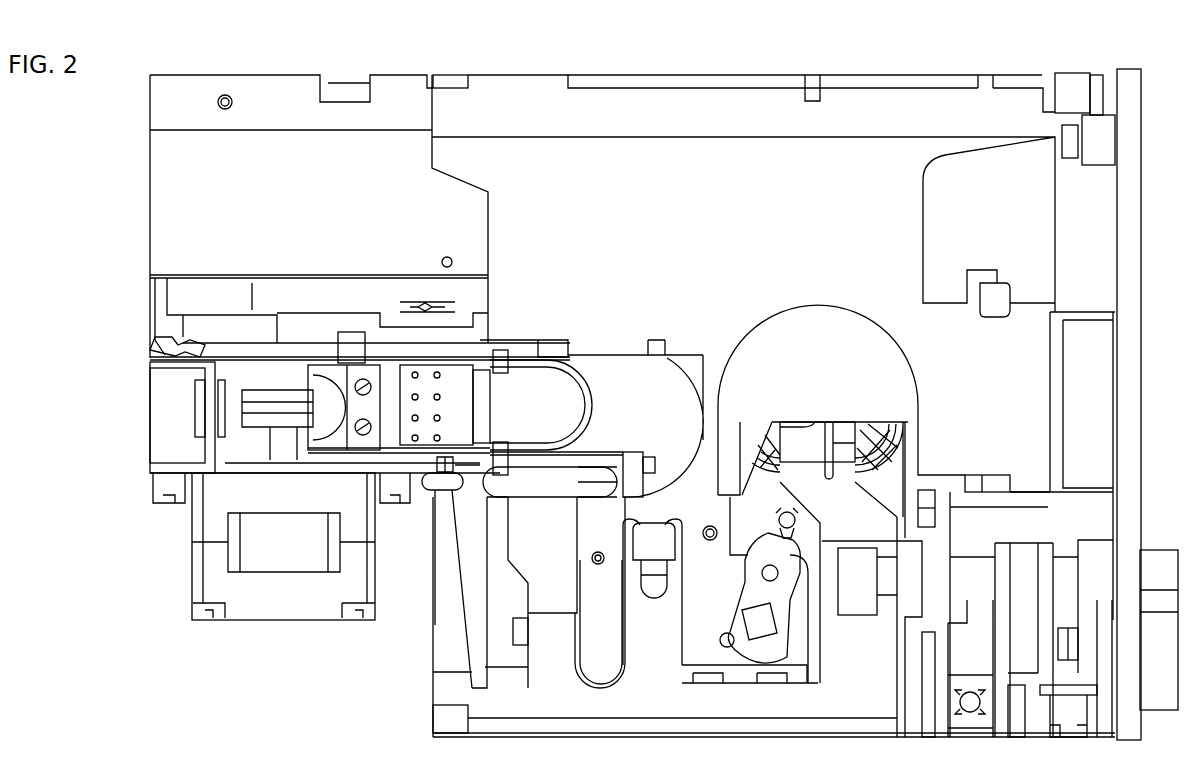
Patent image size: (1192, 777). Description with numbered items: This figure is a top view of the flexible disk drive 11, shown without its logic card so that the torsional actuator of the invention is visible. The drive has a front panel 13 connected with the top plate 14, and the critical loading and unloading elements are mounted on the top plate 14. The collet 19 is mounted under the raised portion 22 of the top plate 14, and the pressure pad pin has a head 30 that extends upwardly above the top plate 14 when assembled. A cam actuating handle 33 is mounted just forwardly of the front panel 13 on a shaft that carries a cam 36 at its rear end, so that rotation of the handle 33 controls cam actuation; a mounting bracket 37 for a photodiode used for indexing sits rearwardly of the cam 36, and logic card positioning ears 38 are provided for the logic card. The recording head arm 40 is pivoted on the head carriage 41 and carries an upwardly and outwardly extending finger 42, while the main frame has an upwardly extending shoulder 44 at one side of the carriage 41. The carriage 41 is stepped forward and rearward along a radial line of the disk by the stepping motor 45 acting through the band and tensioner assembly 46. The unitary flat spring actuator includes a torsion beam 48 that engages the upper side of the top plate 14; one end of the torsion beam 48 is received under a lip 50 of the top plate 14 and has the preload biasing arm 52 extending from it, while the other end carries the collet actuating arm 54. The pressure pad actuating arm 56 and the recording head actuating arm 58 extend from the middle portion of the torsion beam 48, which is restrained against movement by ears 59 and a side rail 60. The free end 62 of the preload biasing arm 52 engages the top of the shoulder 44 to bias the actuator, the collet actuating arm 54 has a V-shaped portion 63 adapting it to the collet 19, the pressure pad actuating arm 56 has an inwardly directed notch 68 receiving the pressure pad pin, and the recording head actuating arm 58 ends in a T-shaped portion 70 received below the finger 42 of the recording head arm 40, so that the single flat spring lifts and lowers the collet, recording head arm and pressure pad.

The flexible disk drive 11 is at (553, 66).
The front panel 13 is at (1128, 160).
The top plate 14 is at (703, 148).
The collet 19 is at (883, 435).
The raised portion 22 is at (823, 320).
The head 30 is at (650, 540).
The cam actuating handle 33 is at (1153, 695).
The cam 36 is at (858, 603).
The mounting bracket 37 is at (757, 598).
The logic card positioning ears 38 is at (448, 83).
The recording head arm 40 is at (572, 395).
The head carriage 41 is at (333, 375).
The finger 42 is at (500, 465).
The shoulder 44 is at (440, 468).
The stepping motor 45 is at (268, 615).
The band and tensioner assembly 46 is at (265, 398).
The torsion beam 48 is at (628, 695).
The lip 50 is at (455, 725).
The preload biasing arm 52 is at (445, 632).
The collet actuating arm 54 is at (831, 520).
The pressure pad actuating arm 56 is at (642, 630).
The recording head actuating arm 58 is at (532, 543).
The ears 59 is at (770, 682).
The side rail 60 is at (524, 728).
The free end 62 is at (435, 495).
The V-shaped portion 63 is at (843, 457).
The notch 68 is at (640, 577).
The T-shaped portion 70 is at (588, 475).